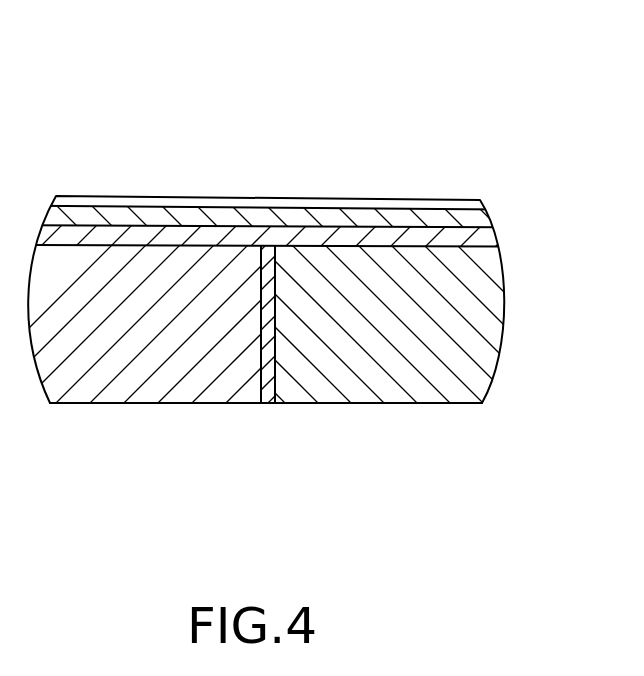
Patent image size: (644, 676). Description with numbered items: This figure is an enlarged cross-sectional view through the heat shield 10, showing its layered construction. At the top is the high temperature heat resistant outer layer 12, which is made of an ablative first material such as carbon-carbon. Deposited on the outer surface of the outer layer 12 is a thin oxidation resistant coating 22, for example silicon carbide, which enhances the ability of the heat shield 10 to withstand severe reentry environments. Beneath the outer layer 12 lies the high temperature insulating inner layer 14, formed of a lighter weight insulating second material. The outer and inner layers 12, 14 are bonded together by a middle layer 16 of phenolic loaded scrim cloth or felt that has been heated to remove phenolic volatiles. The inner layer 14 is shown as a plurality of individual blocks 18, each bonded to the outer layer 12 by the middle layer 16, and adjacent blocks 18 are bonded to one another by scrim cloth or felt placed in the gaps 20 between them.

The heat shield 10 is at (441, 121).
The outer layer 12 is at (490, 214).
The inner layer 14 is at (512, 252).
The middle layer 16 is at (490, 240).
The blocks 18 is at (165, 403).
The gaps 20 is at (263, 403).
The oxidation resistant coating 22 is at (481, 203).